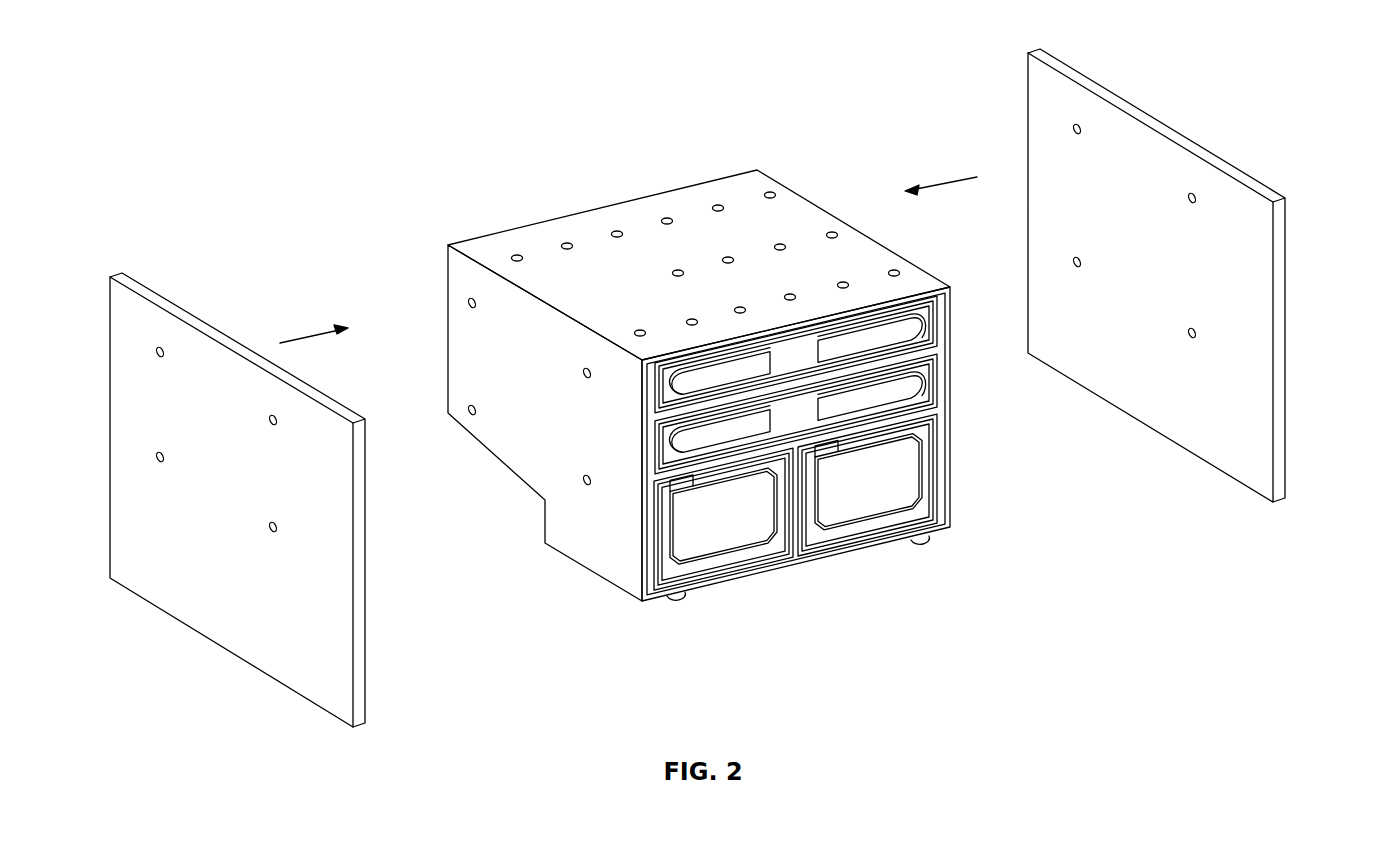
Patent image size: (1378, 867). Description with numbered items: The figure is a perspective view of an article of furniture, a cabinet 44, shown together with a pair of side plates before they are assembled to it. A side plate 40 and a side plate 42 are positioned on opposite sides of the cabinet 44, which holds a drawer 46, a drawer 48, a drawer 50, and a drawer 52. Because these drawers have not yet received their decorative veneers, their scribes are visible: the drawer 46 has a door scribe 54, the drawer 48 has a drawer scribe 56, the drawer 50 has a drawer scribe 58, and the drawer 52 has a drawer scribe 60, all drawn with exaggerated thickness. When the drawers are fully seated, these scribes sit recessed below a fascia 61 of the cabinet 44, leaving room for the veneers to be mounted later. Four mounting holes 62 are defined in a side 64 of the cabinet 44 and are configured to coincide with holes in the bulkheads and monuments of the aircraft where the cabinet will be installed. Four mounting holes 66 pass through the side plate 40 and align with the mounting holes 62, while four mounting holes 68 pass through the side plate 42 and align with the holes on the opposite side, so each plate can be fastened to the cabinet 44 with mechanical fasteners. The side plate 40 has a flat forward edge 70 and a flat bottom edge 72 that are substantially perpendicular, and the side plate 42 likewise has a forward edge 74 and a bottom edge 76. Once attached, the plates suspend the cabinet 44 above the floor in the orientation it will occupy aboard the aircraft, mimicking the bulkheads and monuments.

The side plate 40 is at (237, 500).
The side plate 42 is at (1160, 275).
The cabinet 44 is at (699, 388).
The drawer 46 is at (683, 387).
The drawer 48 is at (683, 445).
The drawer 50 is at (707, 552).
The drawer 52 is at (837, 518).
The door scribe 54 is at (795, 361).
The drawer scribe 56 is at (804, 416).
The drawer scribe 58 is at (672, 527).
The drawer scribe 60 is at (904, 495).
The fascia 61 is at (647, 533).
The mounting holes 62 is at (468, 305).
The side 64 is at (458, 358).
The mounting holes 66 is at (156, 354).
The mounting holes 68 is at (1073, 131).
The forward edge 70 is at (358, 602).
The bottom edge 72 is at (138, 598).
The forward edge 74 is at (1278, 368).
The bottom edge 76 is at (1082, 387).